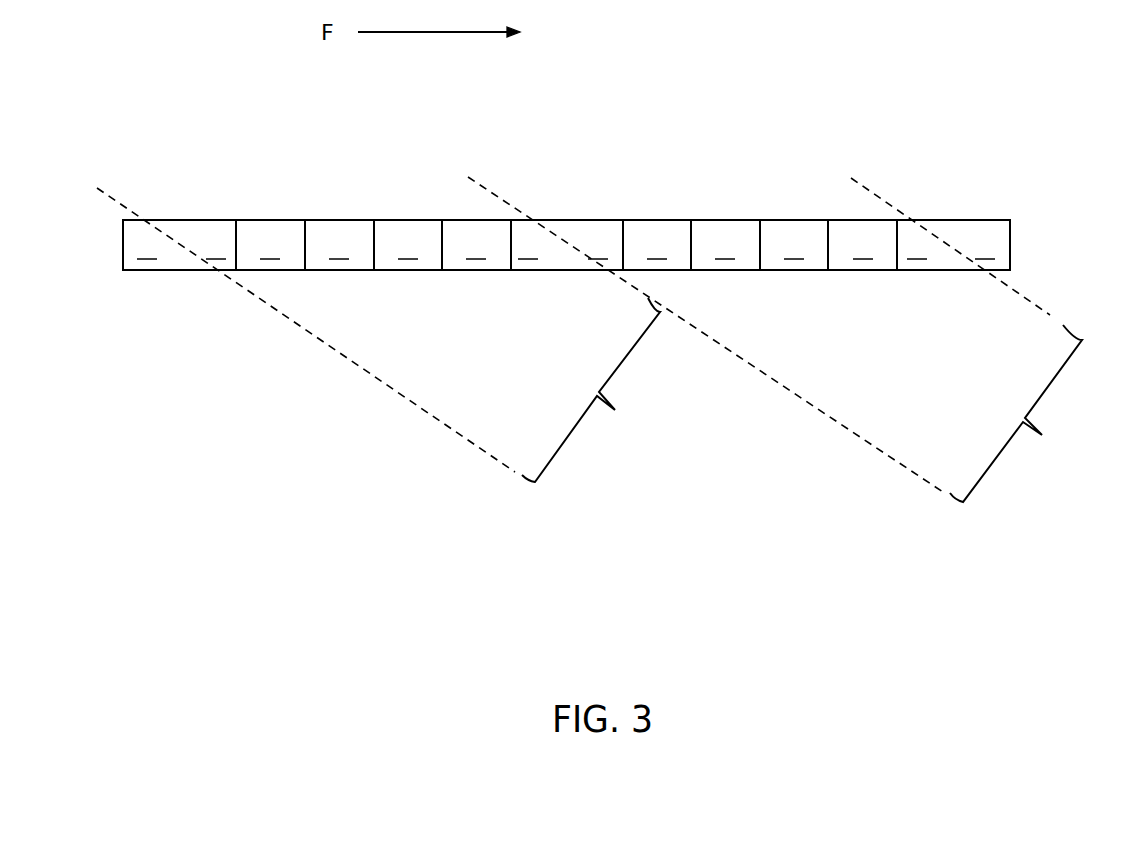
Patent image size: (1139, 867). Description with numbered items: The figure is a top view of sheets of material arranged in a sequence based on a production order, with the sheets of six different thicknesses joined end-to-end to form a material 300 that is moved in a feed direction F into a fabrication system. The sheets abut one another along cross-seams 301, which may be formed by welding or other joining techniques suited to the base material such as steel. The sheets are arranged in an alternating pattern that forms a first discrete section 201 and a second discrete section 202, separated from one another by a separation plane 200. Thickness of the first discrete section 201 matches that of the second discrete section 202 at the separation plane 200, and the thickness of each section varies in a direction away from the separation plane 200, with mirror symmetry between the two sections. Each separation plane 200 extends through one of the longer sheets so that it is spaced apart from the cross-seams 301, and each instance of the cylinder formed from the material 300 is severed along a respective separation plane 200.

The material 300 is at (113, 105).
The cross-seams 301 is at (236, 242).
The separation plane 200 is at (112, 198).
The first discrete section 201 is at (1028, 413).
The second discrete section 202 is at (598, 390).